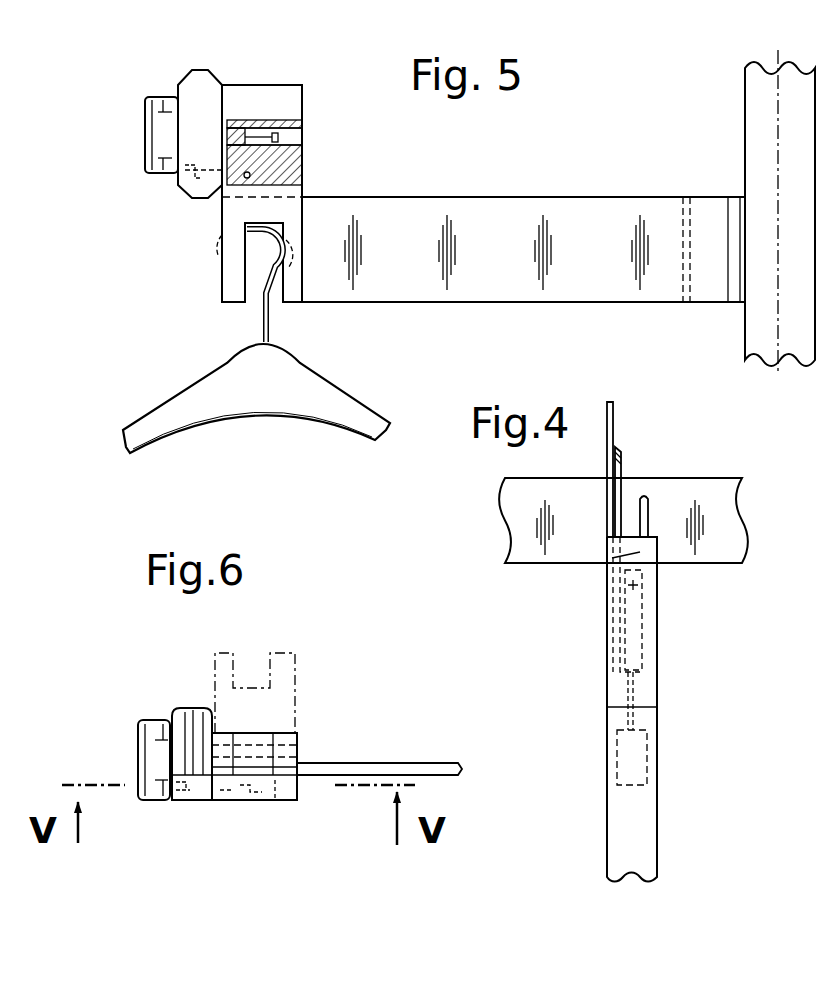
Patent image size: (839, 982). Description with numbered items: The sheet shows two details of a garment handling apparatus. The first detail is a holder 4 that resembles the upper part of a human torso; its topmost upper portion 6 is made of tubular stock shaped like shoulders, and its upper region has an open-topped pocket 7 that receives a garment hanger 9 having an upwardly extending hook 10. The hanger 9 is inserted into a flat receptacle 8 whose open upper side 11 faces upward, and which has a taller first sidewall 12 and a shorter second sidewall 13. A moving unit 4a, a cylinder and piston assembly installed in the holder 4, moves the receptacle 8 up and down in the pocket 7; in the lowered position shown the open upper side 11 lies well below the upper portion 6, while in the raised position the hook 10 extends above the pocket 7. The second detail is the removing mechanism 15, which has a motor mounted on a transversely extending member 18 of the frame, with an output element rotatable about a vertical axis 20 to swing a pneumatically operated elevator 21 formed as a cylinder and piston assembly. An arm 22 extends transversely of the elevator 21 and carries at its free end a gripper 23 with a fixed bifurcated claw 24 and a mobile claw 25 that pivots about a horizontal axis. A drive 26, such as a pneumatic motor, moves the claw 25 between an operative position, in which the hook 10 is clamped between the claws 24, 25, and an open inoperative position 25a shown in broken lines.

In FIG. 4, the holder 4 is at (659, 687).
In FIG. 4, the moving unit 4a is at (647, 765).
In FIG. 4, the upper portion 6 is at (613, 403).
In FIG. 4, the pocket 7 is at (612, 562).
In FIG. 4, the receptacle 8 is at (640, 622).
In FIG. 5, the garment hanger 9 is at (335, 430).
In FIG. 5, the hook 10 is at (268, 232).
In FIG. 4, the open upper side 11 is at (618, 458).
In FIG. 4, the first sidewall 12 is at (622, 468).
In FIG. 4, the second sidewall 13 is at (637, 587).
In FIG. 5, the removing mechanism 15 is at (592, 160).
In FIG. 6, the removing mechanism 15 is at (365, 725).
In FIG. 4, the transversely extending member 18 is at (705, 478).
In FIG. 5, the vertical axis 20 is at (777, 160).
In FIG. 5, the elevator 21 is at (753, 100).
In FIG. 5, the arm 22 is at (483, 197).
In FIG. 6, the arm 22 is at (410, 763).
In FIG. 5, the gripper 23 is at (308, 218).
In FIG. 6, the gripper 23 is at (186, 682).
In FIG. 5, the fixed bifurcated gripping element 24 is at (232, 292).
In FIG. 6, the fixed bifurcated gripping element 24 is at (298, 762).
In FIG. 6, the mobile gripping element 25 is at (258, 733).
In FIG. 6, the inoperative position 25a is at (297, 672).
In FIG. 5, the drive 26 is at (178, 87).
In FIG. 6, the drive 26 is at (172, 715).